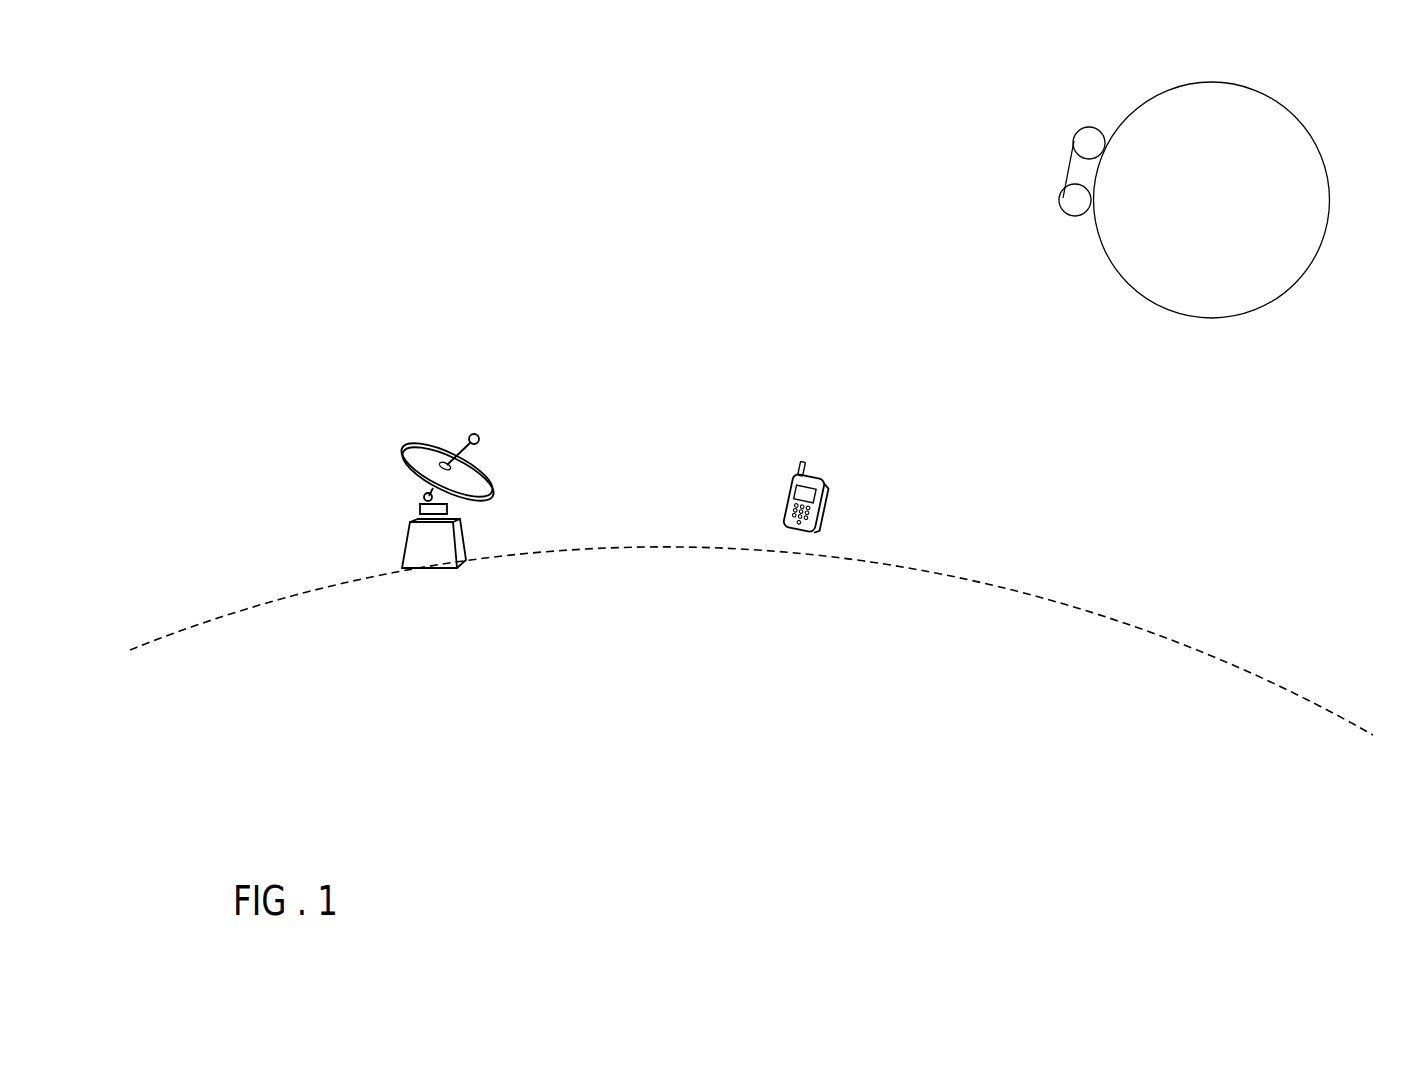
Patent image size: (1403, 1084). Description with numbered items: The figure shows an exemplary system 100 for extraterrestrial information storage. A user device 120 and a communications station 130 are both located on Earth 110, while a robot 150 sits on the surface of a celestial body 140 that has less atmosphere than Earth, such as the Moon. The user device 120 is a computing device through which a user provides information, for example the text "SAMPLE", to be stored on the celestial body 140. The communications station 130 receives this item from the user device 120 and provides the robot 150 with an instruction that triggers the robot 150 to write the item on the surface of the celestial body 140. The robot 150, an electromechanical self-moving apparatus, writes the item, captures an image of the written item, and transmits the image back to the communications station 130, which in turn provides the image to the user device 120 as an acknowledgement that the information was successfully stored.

The system 100 is at (386, 124).
The Earth 110 is at (363, 582).
The user device 120 is at (825, 507).
The communications station 130 is at (405, 460).
The celestial body 140 is at (1205, 318).
The robot 150 is at (1063, 173).